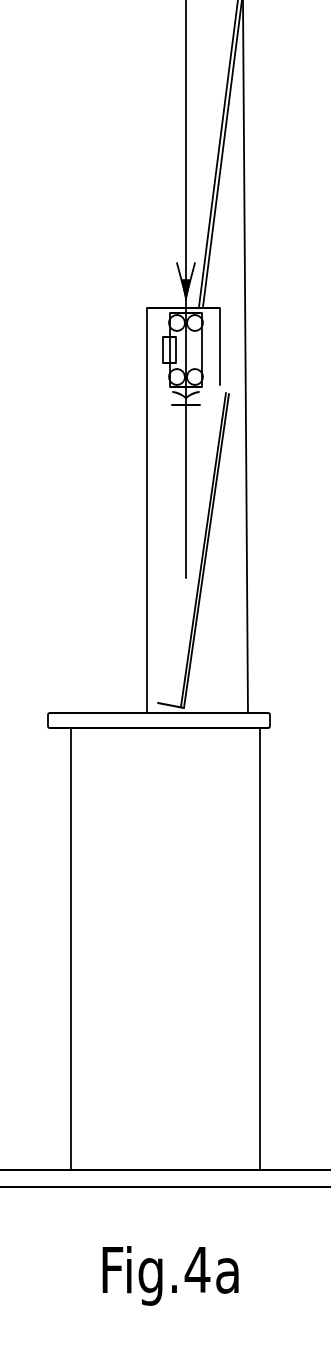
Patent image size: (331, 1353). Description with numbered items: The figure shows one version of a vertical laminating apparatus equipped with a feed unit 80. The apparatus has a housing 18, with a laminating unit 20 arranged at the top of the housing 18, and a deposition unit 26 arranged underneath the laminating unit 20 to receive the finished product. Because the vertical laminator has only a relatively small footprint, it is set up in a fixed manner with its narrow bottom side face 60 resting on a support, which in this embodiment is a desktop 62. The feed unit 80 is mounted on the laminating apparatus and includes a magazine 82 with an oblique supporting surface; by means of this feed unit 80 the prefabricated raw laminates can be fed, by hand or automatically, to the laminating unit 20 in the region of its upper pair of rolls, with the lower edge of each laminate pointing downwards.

The housing 18 is at (148, 538).
The laminating unit 20 is at (167, 353).
The deposition unit 26 is at (212, 517).
The bottom side face 60 is at (200, 725).
The desktop 62 is at (101, 713).
The feed unit 80 is at (192, 107).
The magazine 82 is at (225, 123).